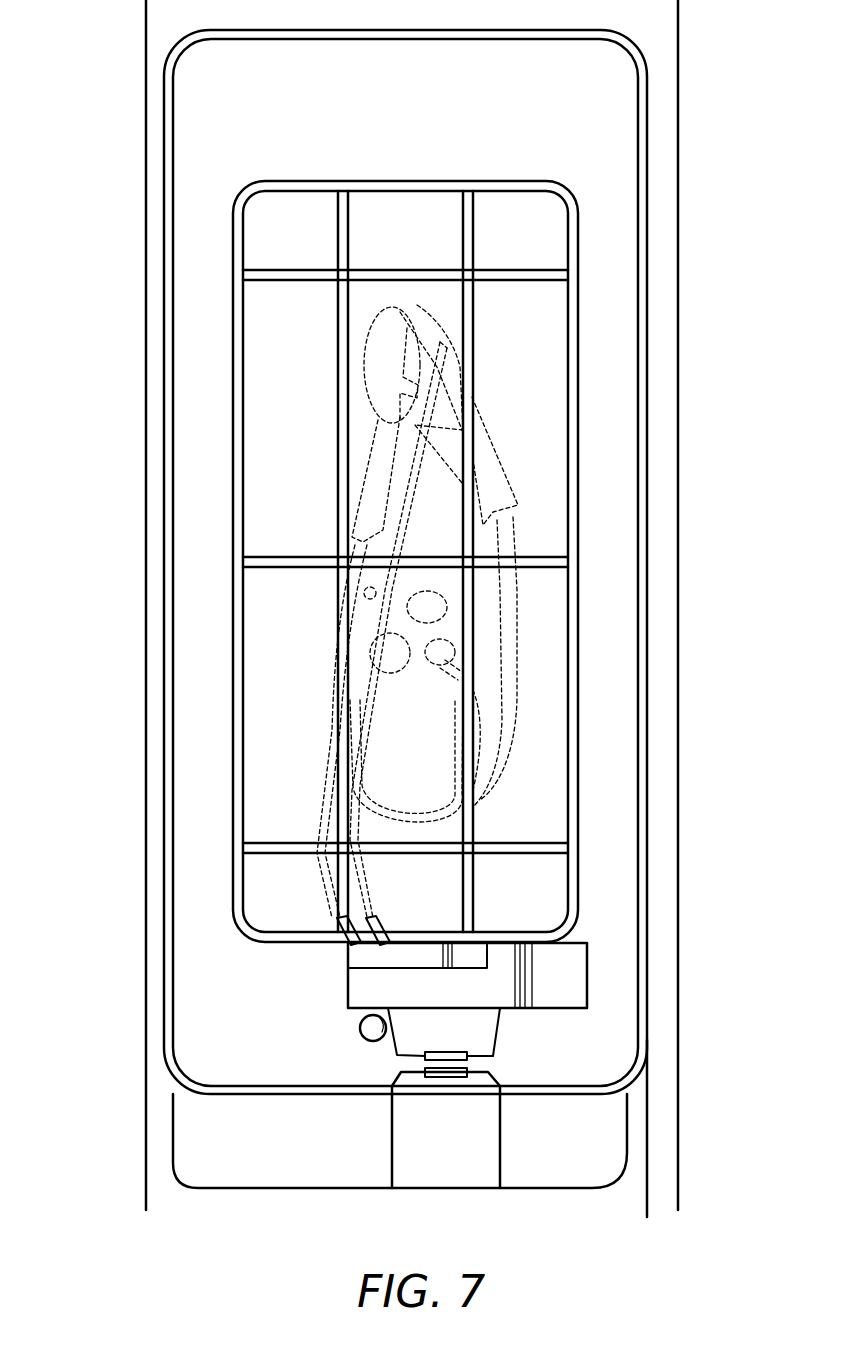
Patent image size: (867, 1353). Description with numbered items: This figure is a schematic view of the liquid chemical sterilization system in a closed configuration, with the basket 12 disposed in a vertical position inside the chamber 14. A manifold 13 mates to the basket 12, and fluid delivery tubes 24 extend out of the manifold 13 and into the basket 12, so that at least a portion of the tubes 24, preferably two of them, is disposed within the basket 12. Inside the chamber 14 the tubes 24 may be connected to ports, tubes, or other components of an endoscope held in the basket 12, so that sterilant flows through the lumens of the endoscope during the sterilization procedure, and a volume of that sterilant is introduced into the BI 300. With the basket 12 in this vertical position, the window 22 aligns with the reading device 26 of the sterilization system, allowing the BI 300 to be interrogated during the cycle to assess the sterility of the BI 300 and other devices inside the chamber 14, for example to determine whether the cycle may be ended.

The chamber 14 is at (602, 104).
The basket 12 is at (575, 287).
The manifold 13 is at (587, 978).
The window 22 is at (440, 1052).
The tubes 24 is at (340, 917).
The reading device 26 is at (391, 1154).
The BI 300 is at (360, 1030).